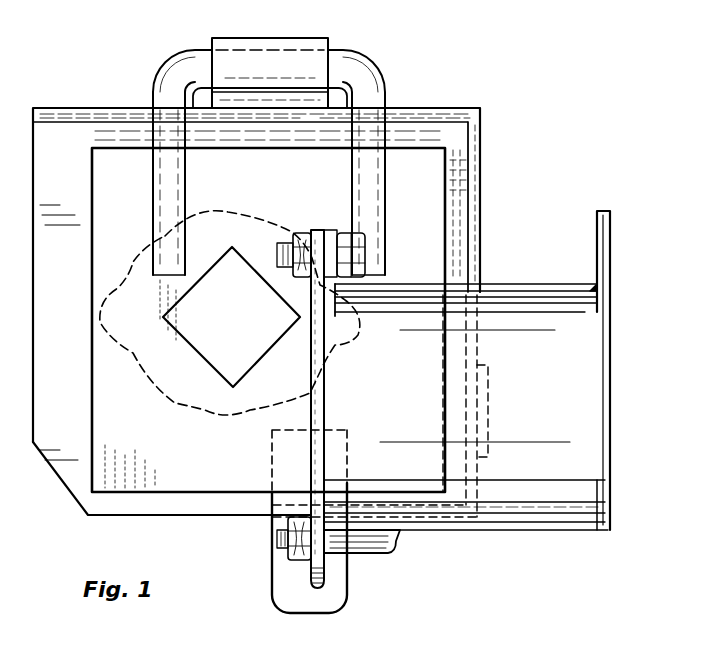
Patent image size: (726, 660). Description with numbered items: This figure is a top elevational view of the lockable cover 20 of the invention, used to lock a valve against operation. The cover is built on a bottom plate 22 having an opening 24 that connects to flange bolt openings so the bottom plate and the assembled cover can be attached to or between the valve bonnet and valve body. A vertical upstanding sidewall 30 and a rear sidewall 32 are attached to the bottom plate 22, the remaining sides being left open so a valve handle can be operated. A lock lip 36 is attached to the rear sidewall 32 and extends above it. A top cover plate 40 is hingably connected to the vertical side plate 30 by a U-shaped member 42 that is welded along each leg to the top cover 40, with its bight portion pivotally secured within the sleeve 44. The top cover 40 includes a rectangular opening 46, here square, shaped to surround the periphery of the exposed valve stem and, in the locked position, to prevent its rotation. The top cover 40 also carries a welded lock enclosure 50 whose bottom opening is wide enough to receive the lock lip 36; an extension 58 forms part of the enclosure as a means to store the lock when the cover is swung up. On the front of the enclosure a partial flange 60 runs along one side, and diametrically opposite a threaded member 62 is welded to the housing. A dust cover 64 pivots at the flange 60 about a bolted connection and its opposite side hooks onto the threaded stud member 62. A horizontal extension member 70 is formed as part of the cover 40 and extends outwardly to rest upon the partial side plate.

The lockable cover 20 is at (510, 115).
The bottom plate 22 is at (68, 314).
The opening 24 is at (212, 413).
The vertical upstanding sidewall 30 is at (58, 107).
The rear sidewall 32 is at (481, 178).
The lock lip 36 is at (488, 408).
The top cover plate 40 is at (180, 396).
The U-shaped member 42 is at (390, 74).
The sleeve 44 is at (318, 38).
The rectangular opening 46 is at (193, 347).
The lock enclosure 50 is at (552, 531).
The extension 58 is at (612, 231).
The partial flange 60 is at (330, 228).
The threaded member 62 is at (365, 551).
The dust cover 64 is at (318, 377).
The horizontal extension member 70 is at (271, 607).